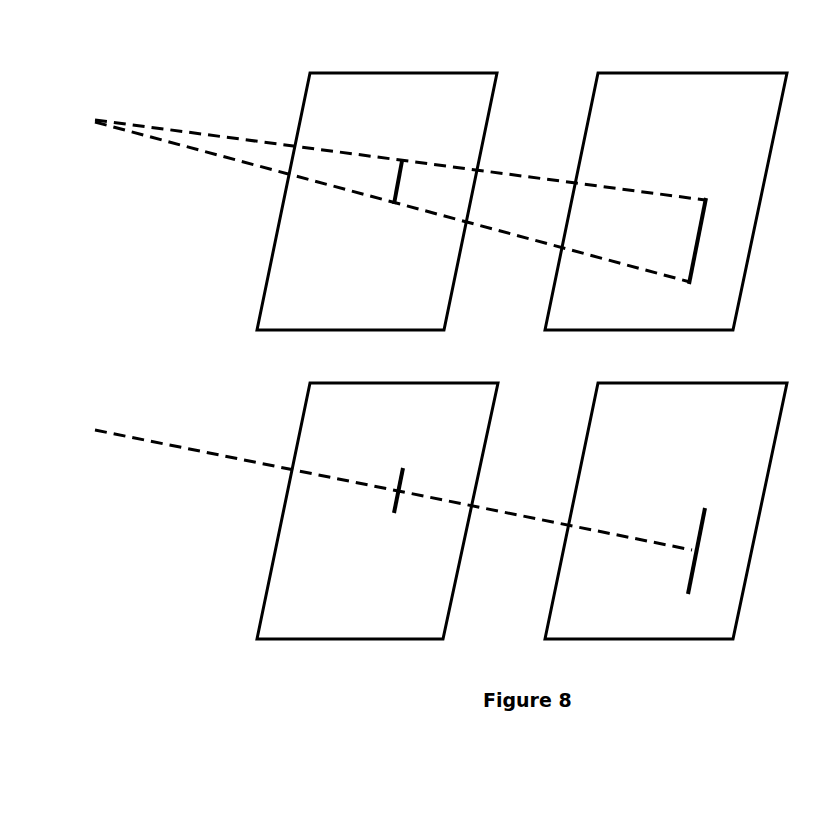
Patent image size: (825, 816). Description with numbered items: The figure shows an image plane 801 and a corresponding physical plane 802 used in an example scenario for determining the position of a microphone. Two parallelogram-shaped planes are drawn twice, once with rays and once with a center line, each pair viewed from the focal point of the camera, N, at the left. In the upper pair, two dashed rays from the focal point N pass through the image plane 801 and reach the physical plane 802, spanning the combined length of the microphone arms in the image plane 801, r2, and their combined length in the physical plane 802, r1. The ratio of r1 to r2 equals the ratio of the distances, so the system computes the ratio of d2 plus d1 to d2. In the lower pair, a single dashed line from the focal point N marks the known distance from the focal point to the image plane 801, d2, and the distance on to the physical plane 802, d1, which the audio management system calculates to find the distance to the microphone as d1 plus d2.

The image plane 801 is at (400, 73).
The physical plane 802 is at (705, 73).
The focal point of camera N is at (386, 332).
The combined length of arms in the physical plane r1 is at (708, 241).
The combined length of arms in the image plane r2 is at (409, 182).
The distance from image plane to physical plane d1 is at (611, 541).
The distance from focal point to image plane d2 is at (318, 474).